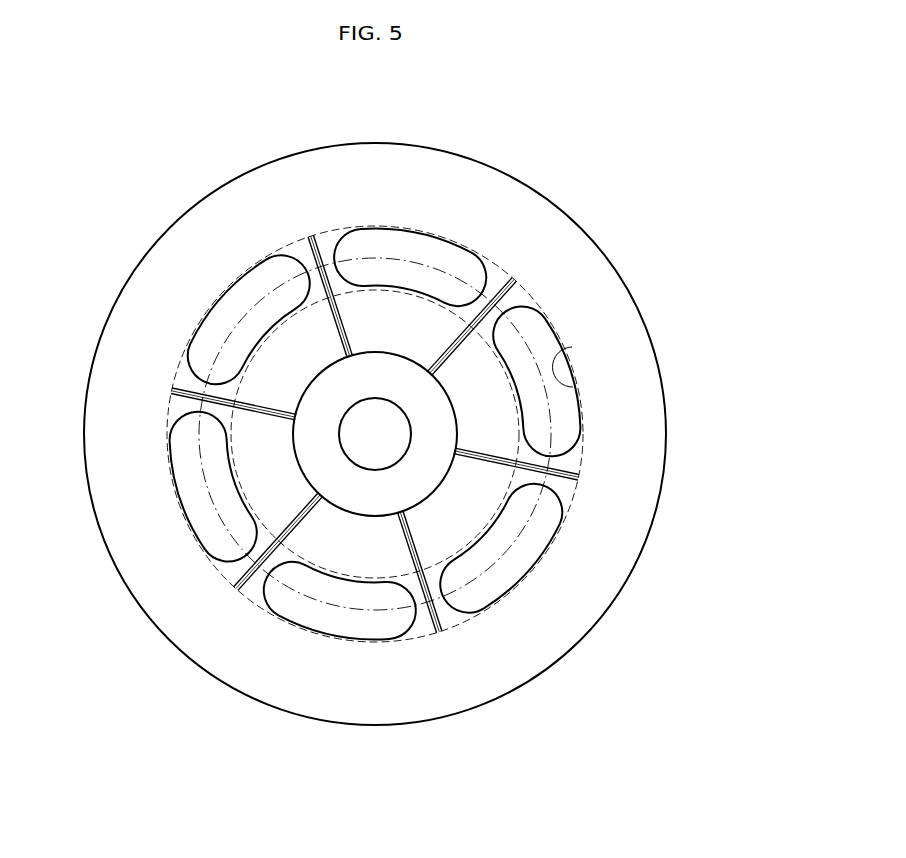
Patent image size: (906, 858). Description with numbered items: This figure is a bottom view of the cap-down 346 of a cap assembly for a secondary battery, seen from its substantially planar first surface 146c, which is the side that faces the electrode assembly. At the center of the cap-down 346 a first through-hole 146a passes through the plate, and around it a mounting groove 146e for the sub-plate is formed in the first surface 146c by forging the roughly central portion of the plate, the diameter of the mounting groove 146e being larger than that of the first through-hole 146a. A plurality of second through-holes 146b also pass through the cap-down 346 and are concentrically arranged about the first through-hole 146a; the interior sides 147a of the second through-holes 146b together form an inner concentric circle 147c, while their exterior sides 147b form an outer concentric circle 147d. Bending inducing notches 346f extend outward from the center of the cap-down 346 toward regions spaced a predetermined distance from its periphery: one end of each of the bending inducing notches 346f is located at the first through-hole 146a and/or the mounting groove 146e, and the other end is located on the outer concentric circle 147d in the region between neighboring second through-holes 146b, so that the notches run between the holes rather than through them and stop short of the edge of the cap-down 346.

The cap-down 346 is at (412, 448).
The bending inducing notches 346f is at (528, 300).
The first through-hole 146a is at (395, 422).
The second through-holes 146b is at (572, 416).
The first surface 146c is at (548, 647).
The mounting groove 146e is at (360, 492).
The interior sides 147a is at (505, 365).
The exterior sides 147b is at (573, 348).
The inner concentric circle 147c is at (518, 453).
The outer concentric circle 147d is at (570, 510).